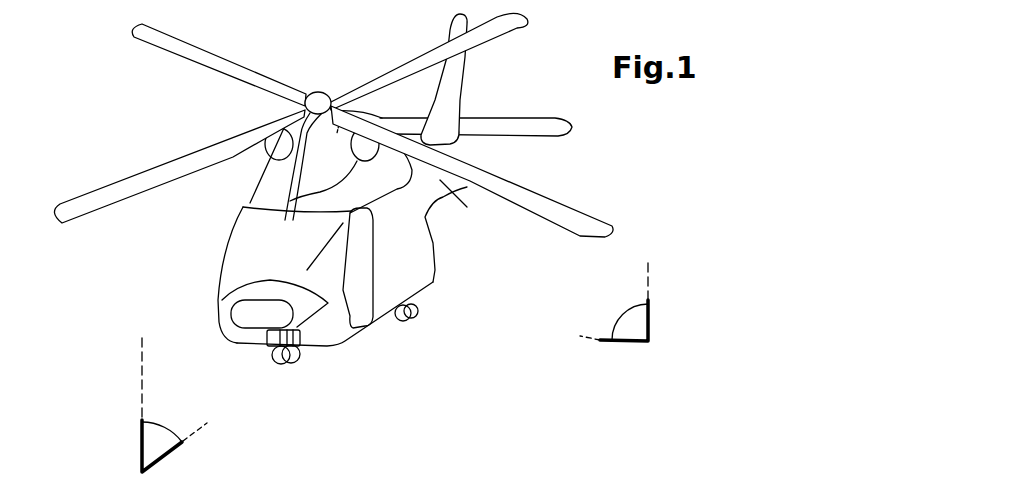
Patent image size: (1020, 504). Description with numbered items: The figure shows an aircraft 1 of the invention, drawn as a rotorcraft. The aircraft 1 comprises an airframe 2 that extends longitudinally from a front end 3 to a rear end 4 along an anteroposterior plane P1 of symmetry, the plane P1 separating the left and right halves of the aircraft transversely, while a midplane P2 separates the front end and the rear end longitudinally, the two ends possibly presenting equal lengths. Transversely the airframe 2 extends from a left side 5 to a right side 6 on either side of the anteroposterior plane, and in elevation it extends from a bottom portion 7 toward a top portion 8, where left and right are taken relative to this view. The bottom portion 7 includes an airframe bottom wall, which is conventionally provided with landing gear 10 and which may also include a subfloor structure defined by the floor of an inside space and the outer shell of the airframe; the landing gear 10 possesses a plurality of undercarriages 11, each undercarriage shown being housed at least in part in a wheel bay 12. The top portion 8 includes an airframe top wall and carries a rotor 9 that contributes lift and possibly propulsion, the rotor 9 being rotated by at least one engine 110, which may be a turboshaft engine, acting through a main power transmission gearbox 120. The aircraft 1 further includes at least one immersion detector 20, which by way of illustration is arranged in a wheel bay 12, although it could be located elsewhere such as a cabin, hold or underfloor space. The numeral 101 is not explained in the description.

The aircraft 1 is at (151, 265).
The airframe 2 is at (457, 197).
The front end 3 is at (235, 323).
The rear end 4 is at (487, 150).
The left side 5 is at (228, 197).
The right side 6 is at (450, 230).
The bottom portion 7 is at (388, 343).
The top portion 8 is at (260, 150).
The rotor 9 is at (232, 95).
The landing gear 10 is at (490, 292).
The undercarriage 11 is at (420, 307).
The wheel bay 12 is at (270, 338).
The immersion detector 20 is at (303, 337).
The front landing gear 101 is at (287, 378).
The engine 110 is at (295, 187).
The main power transmission gearbox 120 is at (323, 91).
The anteroposterior plane P1 is at (153, 442).
The midplane P2 is at (633, 328).